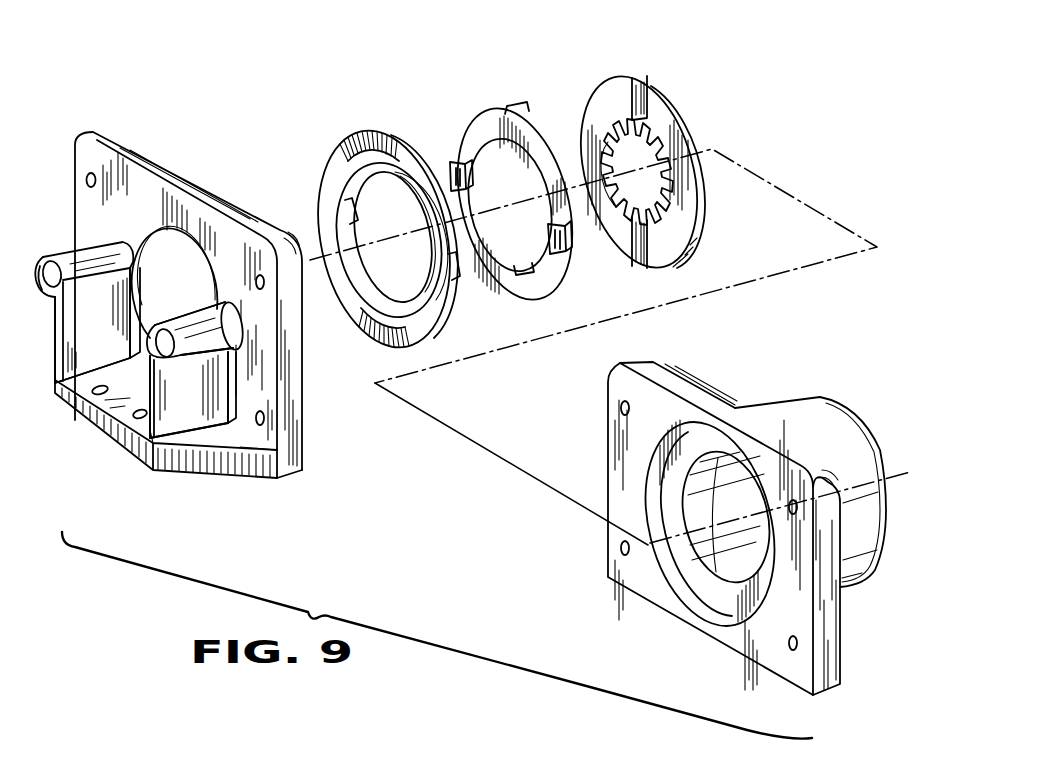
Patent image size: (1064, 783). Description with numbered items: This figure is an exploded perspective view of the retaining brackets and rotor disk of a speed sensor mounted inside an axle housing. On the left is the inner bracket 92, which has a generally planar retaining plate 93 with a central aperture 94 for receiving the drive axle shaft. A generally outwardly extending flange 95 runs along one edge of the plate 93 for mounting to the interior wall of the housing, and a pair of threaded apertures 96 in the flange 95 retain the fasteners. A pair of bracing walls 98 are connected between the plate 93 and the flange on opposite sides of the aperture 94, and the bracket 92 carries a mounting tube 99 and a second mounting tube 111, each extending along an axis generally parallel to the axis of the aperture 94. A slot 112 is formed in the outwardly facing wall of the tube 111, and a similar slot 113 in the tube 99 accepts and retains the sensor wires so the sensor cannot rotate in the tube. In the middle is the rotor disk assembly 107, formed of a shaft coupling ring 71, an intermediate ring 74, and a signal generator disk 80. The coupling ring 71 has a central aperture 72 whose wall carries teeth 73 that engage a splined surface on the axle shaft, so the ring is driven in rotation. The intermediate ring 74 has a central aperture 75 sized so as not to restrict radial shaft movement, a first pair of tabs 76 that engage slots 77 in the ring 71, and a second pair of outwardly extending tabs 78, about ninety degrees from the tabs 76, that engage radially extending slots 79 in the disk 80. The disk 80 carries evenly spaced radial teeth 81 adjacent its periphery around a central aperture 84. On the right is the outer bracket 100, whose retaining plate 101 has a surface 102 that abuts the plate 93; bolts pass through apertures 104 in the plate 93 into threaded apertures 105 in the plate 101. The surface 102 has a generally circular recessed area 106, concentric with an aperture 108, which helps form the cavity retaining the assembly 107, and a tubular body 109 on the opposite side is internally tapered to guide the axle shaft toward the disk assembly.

The shaft coupling ring 71 is at (663, 81).
The central aperture 72 is at (657, 160).
The teeth 73 is at (661, 180).
The intermediate ring 74 is at (488, 110).
The central aperture 75 is at (482, 165).
The tabs 76 is at (527, 108).
The slots 77 is at (639, 78).
The outwardly extending tabs 78 is at (451, 167).
The radially extending slots 79 is at (354, 212).
The signal generator disk 80 is at (395, 131).
The teeth 81 is at (346, 142).
The central aperture 84 is at (377, 280).
The inner bracket 92 is at (76, 240).
The retaining plate 93 is at (88, 208).
The central aperture 94 is at (140, 283).
The flange 95 is at (92, 425).
The apertures 96 is at (98, 392).
The bracing walls 98 is at (112, 347).
The mounting tube 99 is at (193, 327).
The outer bracket 100 is at (680, 374).
The retaining plate 101 is at (832, 628).
The surface 102 is at (747, 644).
The apertures 104 is at (88, 178).
The threaded apertures 105 is at (621, 408).
The recessed area 106 is at (686, 566).
The rotor disk assembly 107 is at (617, 37).
The aperture 108 is at (720, 568).
The tubular body 109 is at (841, 424).
The mounting tube 111 is at (60, 255).
The slot 112 is at (42, 292).
The slot 113 is at (183, 350).